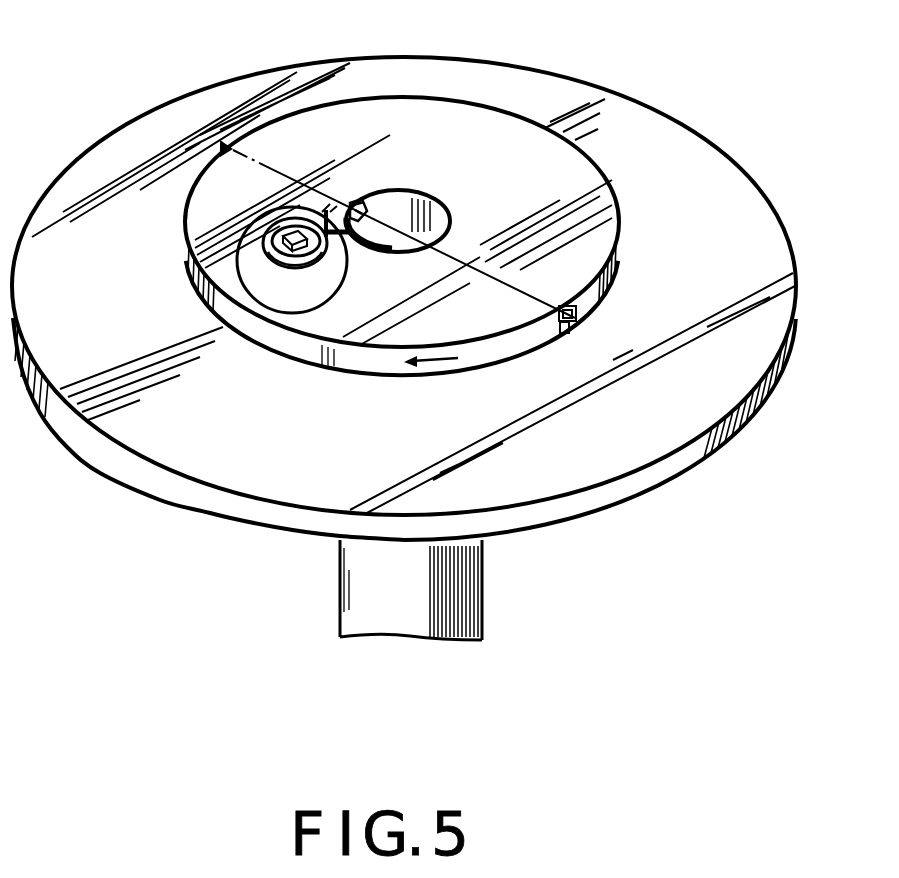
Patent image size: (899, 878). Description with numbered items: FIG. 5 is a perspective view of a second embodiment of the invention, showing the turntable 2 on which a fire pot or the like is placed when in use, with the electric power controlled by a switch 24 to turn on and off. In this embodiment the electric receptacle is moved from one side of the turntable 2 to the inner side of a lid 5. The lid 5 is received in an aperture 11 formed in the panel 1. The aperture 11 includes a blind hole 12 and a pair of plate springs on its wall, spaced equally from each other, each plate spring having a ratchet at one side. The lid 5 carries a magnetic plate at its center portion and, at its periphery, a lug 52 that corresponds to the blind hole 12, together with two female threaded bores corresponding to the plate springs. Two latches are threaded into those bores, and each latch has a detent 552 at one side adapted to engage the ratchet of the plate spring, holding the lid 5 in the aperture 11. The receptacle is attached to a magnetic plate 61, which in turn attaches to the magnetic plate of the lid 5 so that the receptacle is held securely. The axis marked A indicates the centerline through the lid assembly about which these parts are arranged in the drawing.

The panel 1 is at (490, 120).
The aperture 11 is at (400, 203).
The blind hole 12 is at (358, 195).
The lid 5 is at (280, 233).
The lug 52 is at (250, 268).
The detent 552 is at (292, 252).
The magnetic plate 61 is at (205, 300).
The switch 24 is at (572, 312).
The turntable 2 is at (578, 338).
The axis A is at (293, 248).